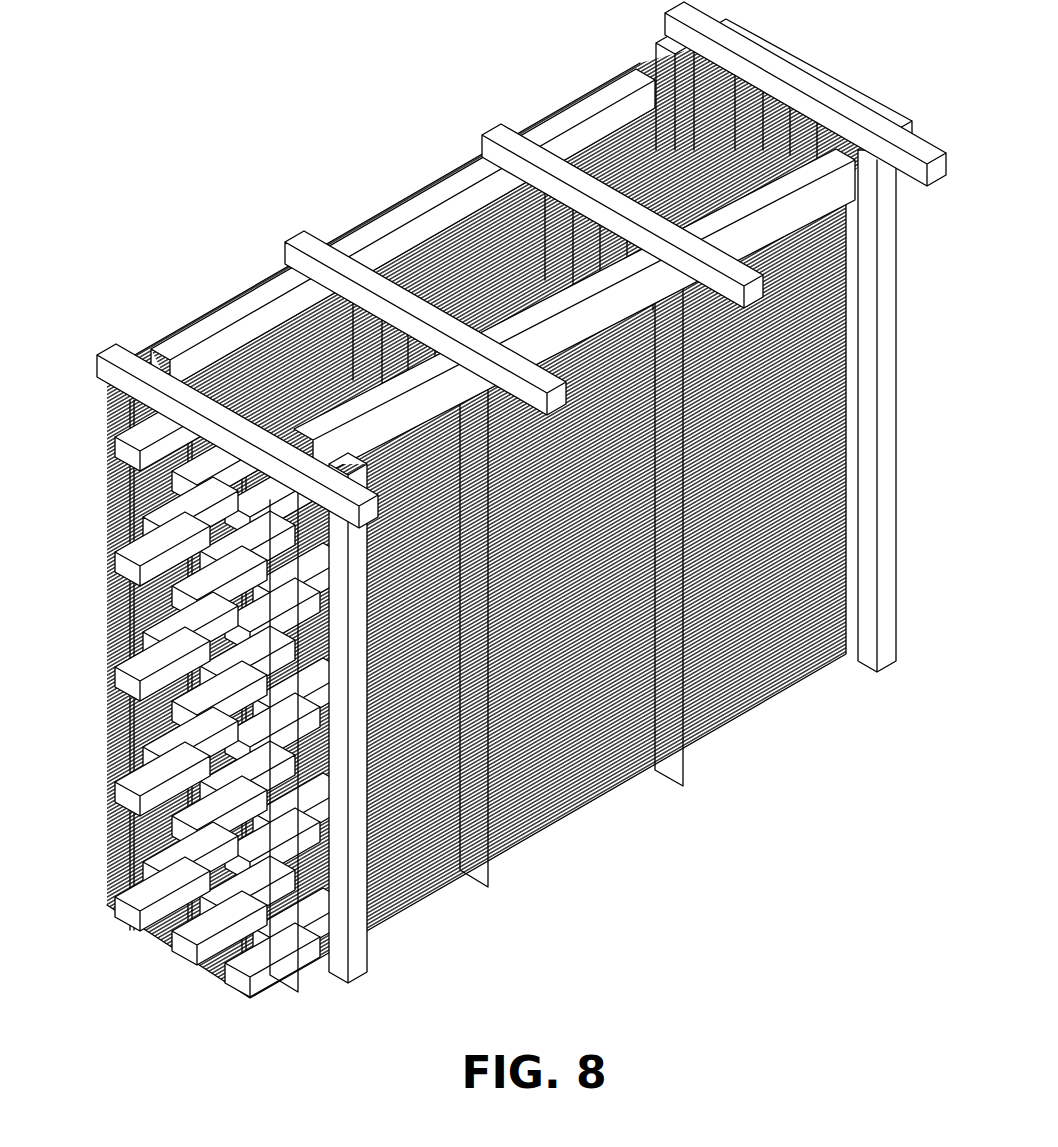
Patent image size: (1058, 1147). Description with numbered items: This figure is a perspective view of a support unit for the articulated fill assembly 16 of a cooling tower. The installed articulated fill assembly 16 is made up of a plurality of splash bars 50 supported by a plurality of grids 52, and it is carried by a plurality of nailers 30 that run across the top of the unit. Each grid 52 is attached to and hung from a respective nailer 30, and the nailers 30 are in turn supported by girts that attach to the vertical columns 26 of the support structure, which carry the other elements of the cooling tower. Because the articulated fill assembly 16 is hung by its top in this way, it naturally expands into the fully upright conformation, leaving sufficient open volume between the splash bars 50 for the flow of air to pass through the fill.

The articulated fill assembly 16 is at (499, 500).
The columns 26 is at (499, 500).
The nailers 30 is at (112, 350).
The splash bars 50 is at (227, 983).
The grids 52 is at (490, 875).